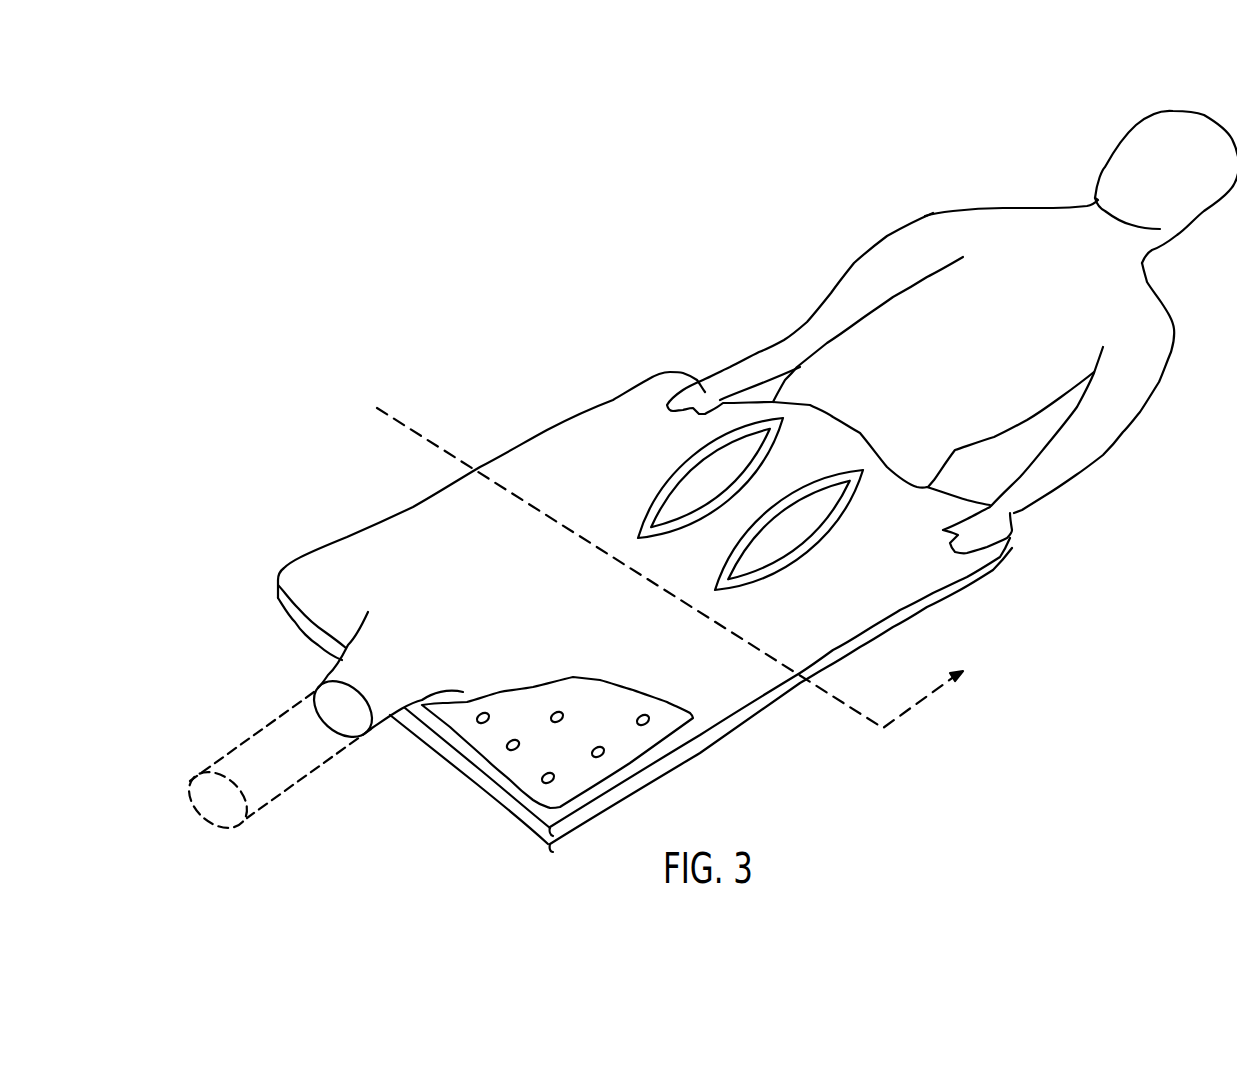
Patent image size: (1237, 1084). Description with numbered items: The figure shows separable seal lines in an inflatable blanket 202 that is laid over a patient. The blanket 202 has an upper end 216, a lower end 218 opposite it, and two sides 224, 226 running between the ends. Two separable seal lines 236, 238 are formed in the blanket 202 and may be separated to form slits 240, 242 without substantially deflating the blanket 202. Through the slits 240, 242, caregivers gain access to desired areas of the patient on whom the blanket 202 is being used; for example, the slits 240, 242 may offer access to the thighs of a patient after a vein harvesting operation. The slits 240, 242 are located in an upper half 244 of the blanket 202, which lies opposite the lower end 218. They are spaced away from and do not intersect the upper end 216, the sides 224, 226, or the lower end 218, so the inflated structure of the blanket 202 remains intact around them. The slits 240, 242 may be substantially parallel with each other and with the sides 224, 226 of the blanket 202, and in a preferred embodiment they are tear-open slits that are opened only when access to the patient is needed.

The blanket 202 is at (649, 605).
The upper end 216 is at (683, 373).
The lower end 218 is at (277, 599).
The side 224 is at (563, 422).
The side 226 is at (953, 590).
The separable seal line 236 is at (683, 483).
The separable seal line 238 is at (820, 523).
The slit 240 is at (696, 490).
The slit 242 is at (758, 553).
The upper half 244 is at (685, 568).